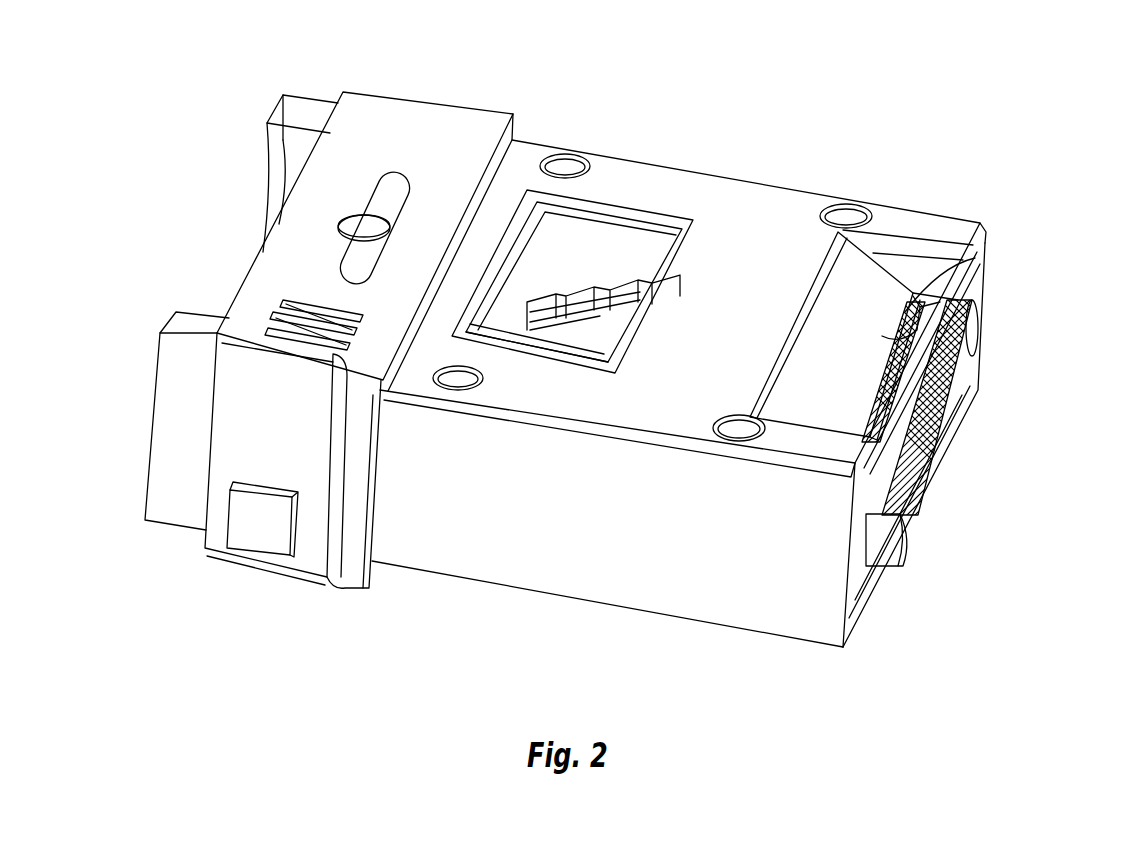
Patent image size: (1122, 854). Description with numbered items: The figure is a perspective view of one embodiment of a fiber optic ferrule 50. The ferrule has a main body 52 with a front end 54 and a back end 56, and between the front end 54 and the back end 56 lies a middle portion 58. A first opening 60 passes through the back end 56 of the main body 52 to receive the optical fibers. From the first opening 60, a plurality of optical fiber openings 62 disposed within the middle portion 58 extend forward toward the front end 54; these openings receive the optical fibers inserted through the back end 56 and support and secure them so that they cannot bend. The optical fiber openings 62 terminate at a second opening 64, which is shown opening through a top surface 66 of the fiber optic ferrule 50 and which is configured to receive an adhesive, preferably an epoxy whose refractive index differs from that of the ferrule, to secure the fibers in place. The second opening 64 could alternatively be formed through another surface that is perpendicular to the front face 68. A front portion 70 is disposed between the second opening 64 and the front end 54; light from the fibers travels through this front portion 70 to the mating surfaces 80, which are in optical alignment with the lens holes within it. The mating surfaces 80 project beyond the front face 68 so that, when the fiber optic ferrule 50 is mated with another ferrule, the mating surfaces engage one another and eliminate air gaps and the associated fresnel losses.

The fiber optic ferrule 50 is at (852, 98).
The main body 52 is at (697, 168).
The front end 54 is at (1006, 224).
The back end 56 is at (195, 592).
The middle portion 58 is at (462, 618).
The first opening 60 is at (535, 262).
The optical fiber openings 62 is at (978, 263).
The second opening 64 is at (908, 265).
The top surface 66 is at (772, 200).
The front face 68 is at (865, 594).
The front portion 70 is at (977, 285).
The mating surfaces 80 is at (937, 450).